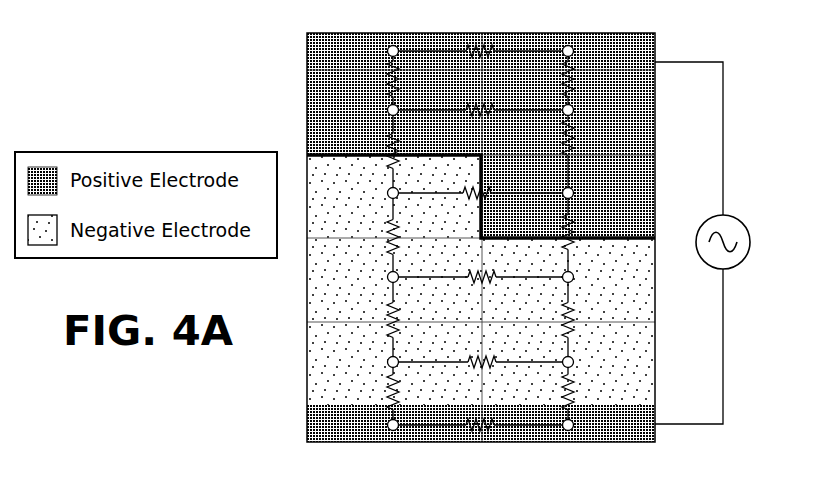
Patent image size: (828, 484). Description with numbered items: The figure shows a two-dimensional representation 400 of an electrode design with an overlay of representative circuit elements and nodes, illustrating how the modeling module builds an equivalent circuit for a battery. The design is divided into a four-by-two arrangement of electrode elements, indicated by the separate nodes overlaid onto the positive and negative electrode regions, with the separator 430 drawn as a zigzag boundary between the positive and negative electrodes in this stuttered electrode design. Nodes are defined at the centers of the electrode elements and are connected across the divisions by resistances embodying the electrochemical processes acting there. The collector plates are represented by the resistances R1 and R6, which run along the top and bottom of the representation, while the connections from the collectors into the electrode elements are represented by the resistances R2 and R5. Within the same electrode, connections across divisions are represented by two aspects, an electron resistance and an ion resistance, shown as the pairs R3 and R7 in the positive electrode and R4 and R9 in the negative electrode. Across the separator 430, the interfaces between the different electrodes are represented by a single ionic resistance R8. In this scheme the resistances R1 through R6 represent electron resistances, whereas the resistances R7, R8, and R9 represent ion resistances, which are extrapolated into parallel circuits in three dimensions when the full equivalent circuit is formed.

The two-dimensional representation 400 is at (240, 56).
The separator 430 is at (661, 237).
The resistance R1 is at (480, 32).
The resistance R2 is at (479, 82).
The resistance R3 is at (524, 116).
The resistance R4 is at (462, 299).
The resistance R5 is at (481, 390).
The resistance R6 is at (480, 444).
The resistance R7 is at (563, 118).
The resistance R8 is at (495, 188).
The resistance R9 is at (487, 299).